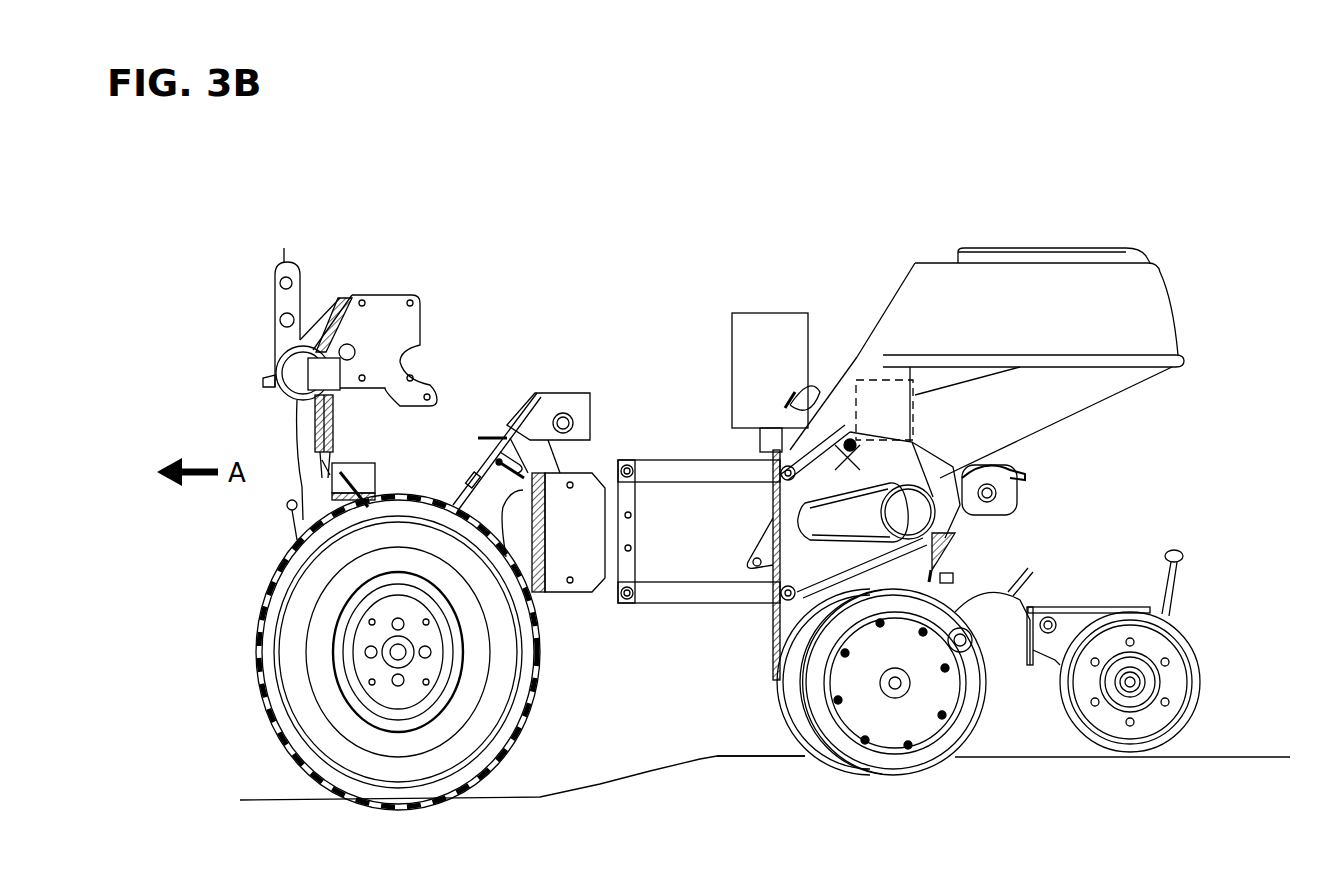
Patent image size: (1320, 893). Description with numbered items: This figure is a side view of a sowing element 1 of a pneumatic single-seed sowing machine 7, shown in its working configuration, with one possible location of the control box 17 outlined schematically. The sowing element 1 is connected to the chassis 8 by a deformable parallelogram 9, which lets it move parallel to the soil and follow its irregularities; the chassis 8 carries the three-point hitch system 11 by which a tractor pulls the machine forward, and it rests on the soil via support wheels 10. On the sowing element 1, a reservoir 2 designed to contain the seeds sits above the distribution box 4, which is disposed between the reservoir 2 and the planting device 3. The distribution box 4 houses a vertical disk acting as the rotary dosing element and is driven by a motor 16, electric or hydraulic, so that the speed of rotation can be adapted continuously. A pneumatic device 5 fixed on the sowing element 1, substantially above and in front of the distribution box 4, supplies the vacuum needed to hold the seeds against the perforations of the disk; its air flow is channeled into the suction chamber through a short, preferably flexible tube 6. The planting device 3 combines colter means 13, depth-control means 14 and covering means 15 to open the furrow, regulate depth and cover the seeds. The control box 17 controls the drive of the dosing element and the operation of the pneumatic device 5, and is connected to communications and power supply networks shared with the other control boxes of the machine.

The sowing element 1 is at (1165, 268).
The reservoir 2 is at (1030, 263).
The planting device 3 is at (968, 742).
The distribution box 4 is at (973, 528).
The pneumatic device 5 is at (763, 313).
The tube 6 is at (855, 418).
The sowing machine 7 is at (396, 292).
The chassis 8 is at (593, 475).
The deformable parallelogram 9 is at (680, 606).
The support wheels 10 is at (517, 745).
The hitch system 11 is at (268, 295).
The colter means 13 is at (805, 756).
The depth-control means 14 is at (1000, 702).
The covering means 15 is at (1200, 672).
The motor 16 is at (965, 562).
The control box 17 is at (885, 380).